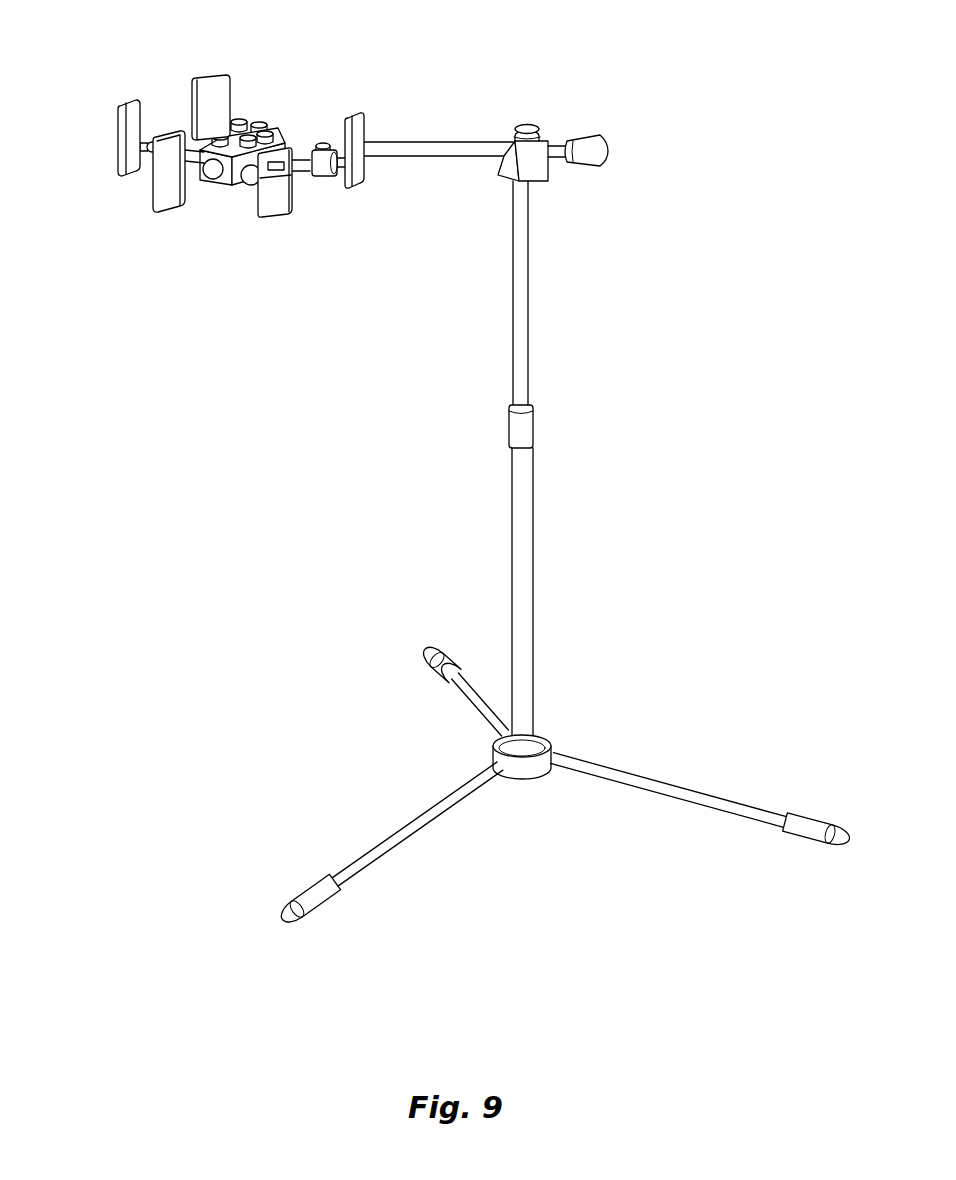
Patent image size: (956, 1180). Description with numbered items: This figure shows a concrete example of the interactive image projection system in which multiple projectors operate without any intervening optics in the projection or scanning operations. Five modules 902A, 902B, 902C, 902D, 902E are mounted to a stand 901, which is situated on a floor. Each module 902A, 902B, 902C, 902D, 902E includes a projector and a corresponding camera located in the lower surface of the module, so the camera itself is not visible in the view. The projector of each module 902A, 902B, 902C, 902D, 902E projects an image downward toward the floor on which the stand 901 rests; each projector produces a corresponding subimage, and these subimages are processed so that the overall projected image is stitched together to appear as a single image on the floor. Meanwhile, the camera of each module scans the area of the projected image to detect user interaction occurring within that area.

The stand 901 is at (434, 141).
The module 902A is at (210, 75).
The module 902B is at (356, 112).
The module 902C is at (278, 215).
The module 902D is at (167, 205).
The module 902E is at (131, 100).